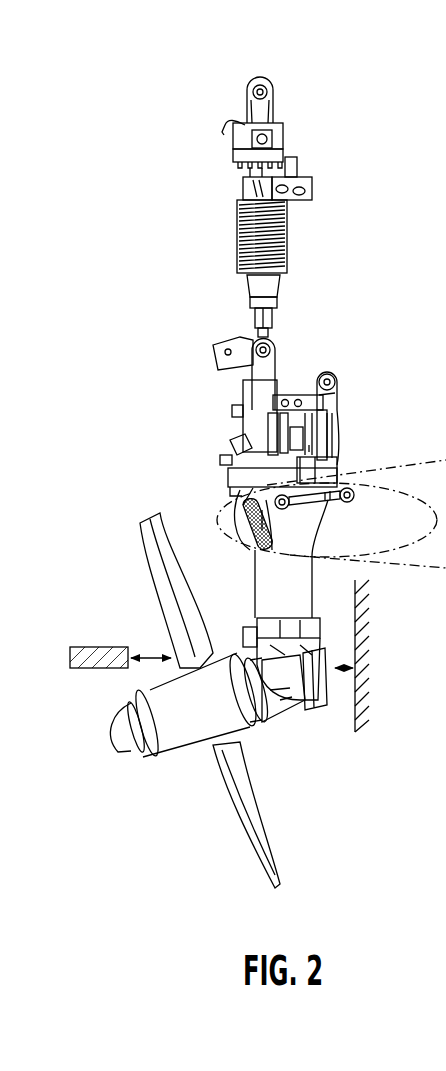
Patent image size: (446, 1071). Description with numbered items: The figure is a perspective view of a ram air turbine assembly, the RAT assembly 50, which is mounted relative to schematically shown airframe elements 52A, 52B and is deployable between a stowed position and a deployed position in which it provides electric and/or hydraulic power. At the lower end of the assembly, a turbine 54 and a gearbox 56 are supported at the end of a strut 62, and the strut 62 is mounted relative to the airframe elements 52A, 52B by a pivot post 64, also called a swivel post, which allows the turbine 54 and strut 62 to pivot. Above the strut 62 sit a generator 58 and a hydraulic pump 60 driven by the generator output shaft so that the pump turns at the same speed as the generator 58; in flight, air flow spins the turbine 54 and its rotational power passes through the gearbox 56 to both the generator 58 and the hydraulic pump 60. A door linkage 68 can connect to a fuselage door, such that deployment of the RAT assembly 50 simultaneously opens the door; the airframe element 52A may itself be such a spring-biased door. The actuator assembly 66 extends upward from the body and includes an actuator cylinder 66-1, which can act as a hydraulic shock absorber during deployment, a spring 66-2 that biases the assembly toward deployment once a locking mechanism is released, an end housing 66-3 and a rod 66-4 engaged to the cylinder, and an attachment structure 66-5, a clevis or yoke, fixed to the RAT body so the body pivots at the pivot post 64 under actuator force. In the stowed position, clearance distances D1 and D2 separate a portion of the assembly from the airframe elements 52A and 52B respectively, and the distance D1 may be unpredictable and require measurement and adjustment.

The RAT assembly 50 is at (144, 145).
The actuator assembly 66 is at (276, 104).
The actuator cylinder 66-1 is at (245, 176).
The spring 66-2 is at (236, 238).
The end housing 66-3 is at (254, 320).
The rod 66-4 is at (246, 334).
The attachment structure 66-5 is at (246, 381).
The pivot post 64 is at (339, 393).
The hydraulic pump 60 is at (335, 398).
The generator 58 is at (339, 432).
The door linkage 68 is at (344, 502).
The strut 62 is at (257, 564).
The gearbox 56 is at (292, 703).
The turbine 54 is at (162, 594).
The airframe element 52B is at (100, 646).
The airframe element 52A is at (352, 722).
The clearance distance D1 is at (344, 662).
The clearance distance D2 is at (150, 655).